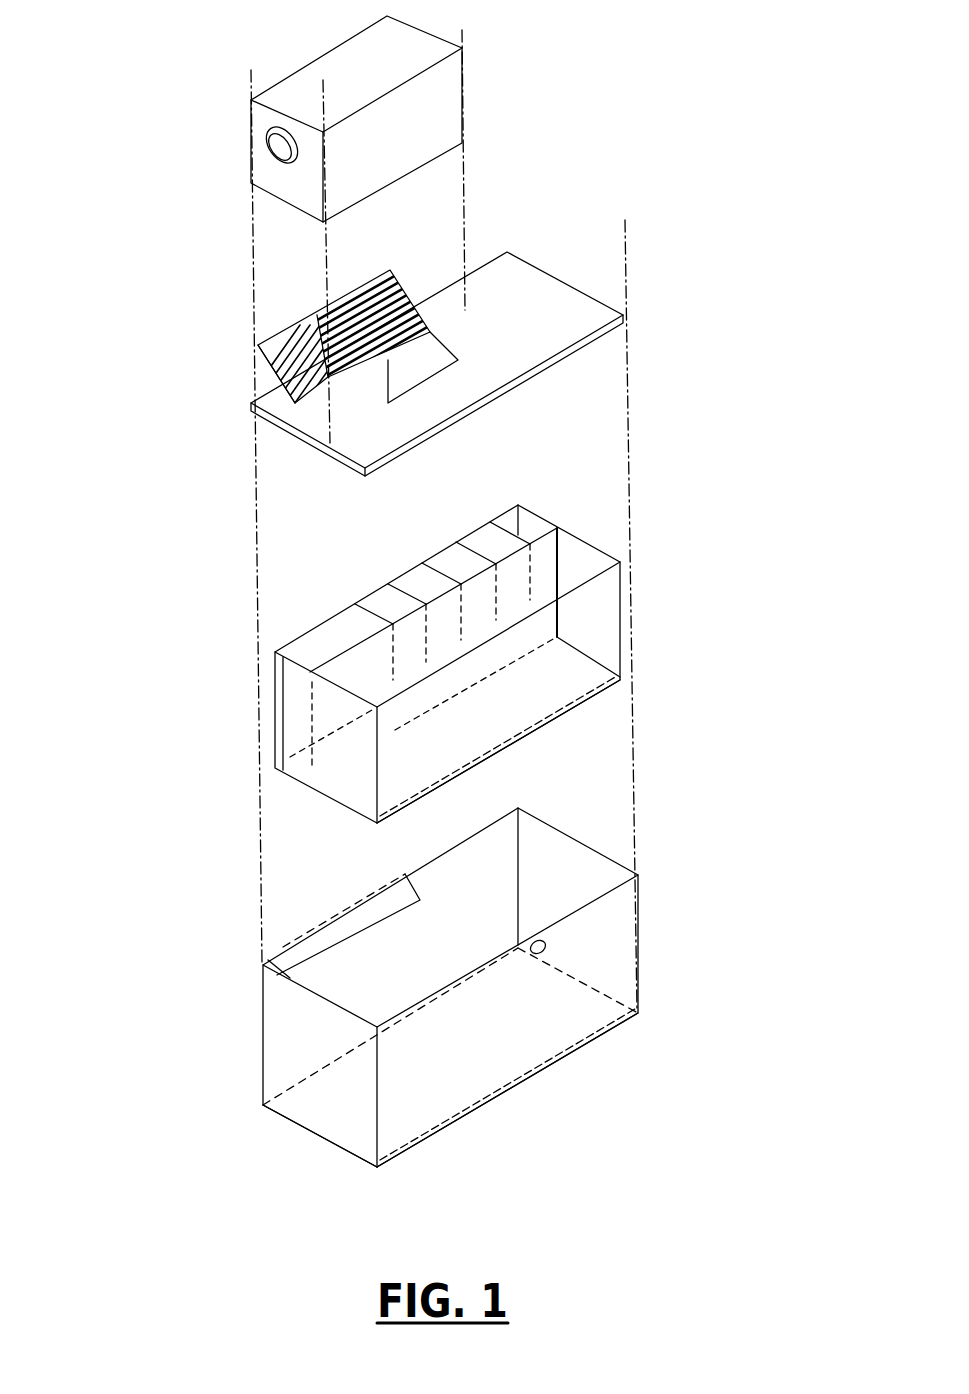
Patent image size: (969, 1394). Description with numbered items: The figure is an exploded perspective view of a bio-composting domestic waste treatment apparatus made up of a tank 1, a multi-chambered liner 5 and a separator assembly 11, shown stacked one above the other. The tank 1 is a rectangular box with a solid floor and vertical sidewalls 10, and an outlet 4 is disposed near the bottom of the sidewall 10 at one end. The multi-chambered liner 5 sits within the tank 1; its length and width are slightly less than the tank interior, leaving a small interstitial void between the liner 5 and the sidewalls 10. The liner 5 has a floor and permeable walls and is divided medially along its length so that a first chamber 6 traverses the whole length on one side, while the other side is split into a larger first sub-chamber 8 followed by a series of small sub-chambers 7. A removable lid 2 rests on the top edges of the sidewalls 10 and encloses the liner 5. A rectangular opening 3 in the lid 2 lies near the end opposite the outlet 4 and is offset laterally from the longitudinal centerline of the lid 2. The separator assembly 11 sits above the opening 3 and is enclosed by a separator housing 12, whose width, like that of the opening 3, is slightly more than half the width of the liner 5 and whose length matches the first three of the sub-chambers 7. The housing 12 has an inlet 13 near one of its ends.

The tank 1 is at (520, 987).
The removable lid 2 is at (390, 355).
The rectangular opening 3 is at (425, 372).
The outlet 4 is at (548, 947).
The multi-chambered liner 5 is at (472, 661).
The first chamber 6 is at (493, 716).
The small sub-chambers 7 is at (513, 500).
The first sub-chamber 8 is at (305, 648).
The sidewalls 10 is at (457, 1077).
The separator assembly 11 is at (240, 375).
The separator housing 12 is at (365, 119).
The inlet 13 is at (247, 132).